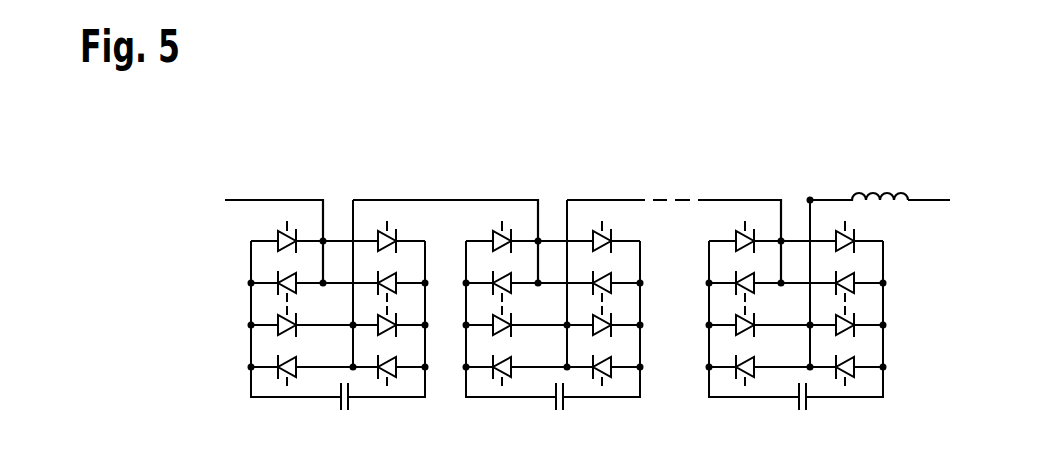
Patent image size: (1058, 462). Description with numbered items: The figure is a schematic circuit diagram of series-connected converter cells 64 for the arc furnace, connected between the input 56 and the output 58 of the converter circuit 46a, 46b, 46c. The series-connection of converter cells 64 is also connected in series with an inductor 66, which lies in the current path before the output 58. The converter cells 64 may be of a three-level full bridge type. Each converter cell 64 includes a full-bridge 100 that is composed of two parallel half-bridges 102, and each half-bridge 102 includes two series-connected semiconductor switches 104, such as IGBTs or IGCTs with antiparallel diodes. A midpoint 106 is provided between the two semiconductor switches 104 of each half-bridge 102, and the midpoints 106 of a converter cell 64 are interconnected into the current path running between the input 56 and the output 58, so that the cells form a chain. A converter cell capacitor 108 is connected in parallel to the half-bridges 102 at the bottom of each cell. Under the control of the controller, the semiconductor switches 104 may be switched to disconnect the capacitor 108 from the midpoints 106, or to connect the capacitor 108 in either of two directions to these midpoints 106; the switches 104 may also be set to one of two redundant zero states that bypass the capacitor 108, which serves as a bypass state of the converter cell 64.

The converter circuit 46a is at (151, 160).
The converter circuit 46b is at (151, 160).
The converter circuit 46c is at (220, 176).
The input 56 is at (262, 200).
The output 58 is at (935, 200).
The converter cell 64 is at (333, 196).
The inductor 66 is at (876, 187).
The full-bridge 100 is at (218, 292).
The half-bridge 102 is at (218, 224).
The semiconductor switch 104 is at (288, 230).
The midpoint 106 is at (320, 262).
The converter cell capacitor 108 is at (340, 402).